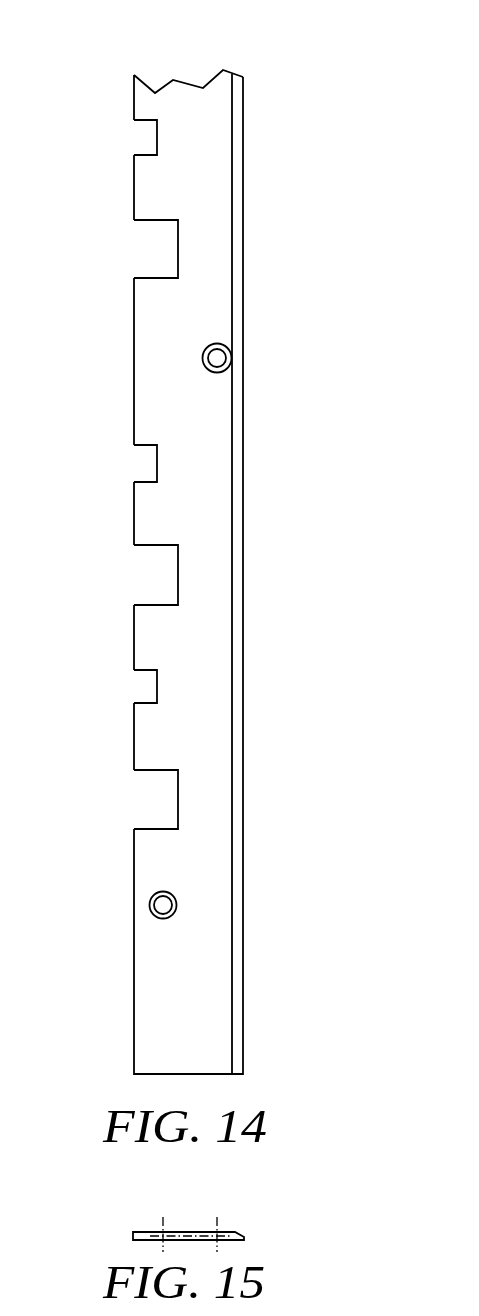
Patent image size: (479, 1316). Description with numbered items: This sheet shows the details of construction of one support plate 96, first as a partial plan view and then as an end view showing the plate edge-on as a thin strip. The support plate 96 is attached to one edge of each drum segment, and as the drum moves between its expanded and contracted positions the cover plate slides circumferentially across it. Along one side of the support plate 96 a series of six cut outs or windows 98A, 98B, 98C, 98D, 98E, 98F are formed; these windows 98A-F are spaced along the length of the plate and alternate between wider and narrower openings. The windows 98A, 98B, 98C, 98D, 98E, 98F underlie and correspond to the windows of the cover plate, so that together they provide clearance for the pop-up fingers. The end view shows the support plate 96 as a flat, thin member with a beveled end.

In FIG. 14, the support plate 96 is at (220, 207).
In FIG. 15, the support plate 96 is at (226, 1230).
In FIG. 14, the window 98A is at (152, 827).
In FIG. 14, the window 98B is at (157, 602).
In FIG. 14, the window 98C is at (147, 275).
In FIG. 14, the window 98D is at (147, 700).
In FIG. 14, the window 98E is at (147, 478).
In FIG. 14, the window 98F is at (147, 153).